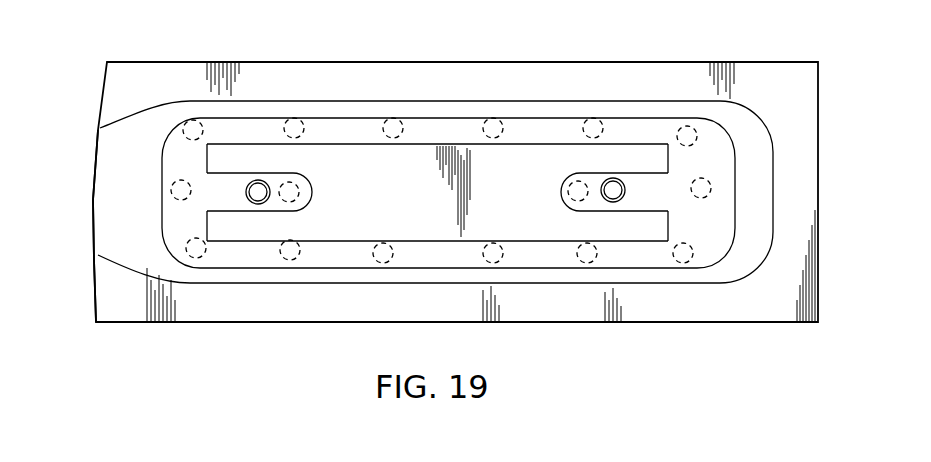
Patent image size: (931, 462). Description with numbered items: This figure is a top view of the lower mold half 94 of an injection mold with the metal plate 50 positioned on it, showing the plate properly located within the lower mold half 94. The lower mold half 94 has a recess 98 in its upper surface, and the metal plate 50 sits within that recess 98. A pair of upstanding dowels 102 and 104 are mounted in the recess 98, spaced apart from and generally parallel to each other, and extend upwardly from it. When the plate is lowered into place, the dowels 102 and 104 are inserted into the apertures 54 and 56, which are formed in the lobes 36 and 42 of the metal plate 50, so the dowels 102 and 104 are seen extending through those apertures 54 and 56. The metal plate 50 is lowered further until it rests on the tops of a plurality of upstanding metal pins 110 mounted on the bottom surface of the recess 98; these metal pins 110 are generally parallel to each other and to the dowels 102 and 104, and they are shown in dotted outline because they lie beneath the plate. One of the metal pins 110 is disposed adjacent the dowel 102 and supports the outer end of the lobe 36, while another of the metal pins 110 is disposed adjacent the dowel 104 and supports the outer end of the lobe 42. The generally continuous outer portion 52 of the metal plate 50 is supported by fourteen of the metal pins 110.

The lobe 36 is at (313, 186).
The lobe 42 is at (562, 182).
The metal plate 50 is at (165, 238).
The generally continuous outer portion 52 is at (578, 117).
The aperture 54 is at (261, 204).
The aperture 56 is at (605, 181).
The lower mold half 94 is at (664, 326).
The recess 98 is at (113, 222).
The dowel 102 is at (265, 186).
The dowel 104 is at (609, 200).
The metal pins 110 is at (493, 118).